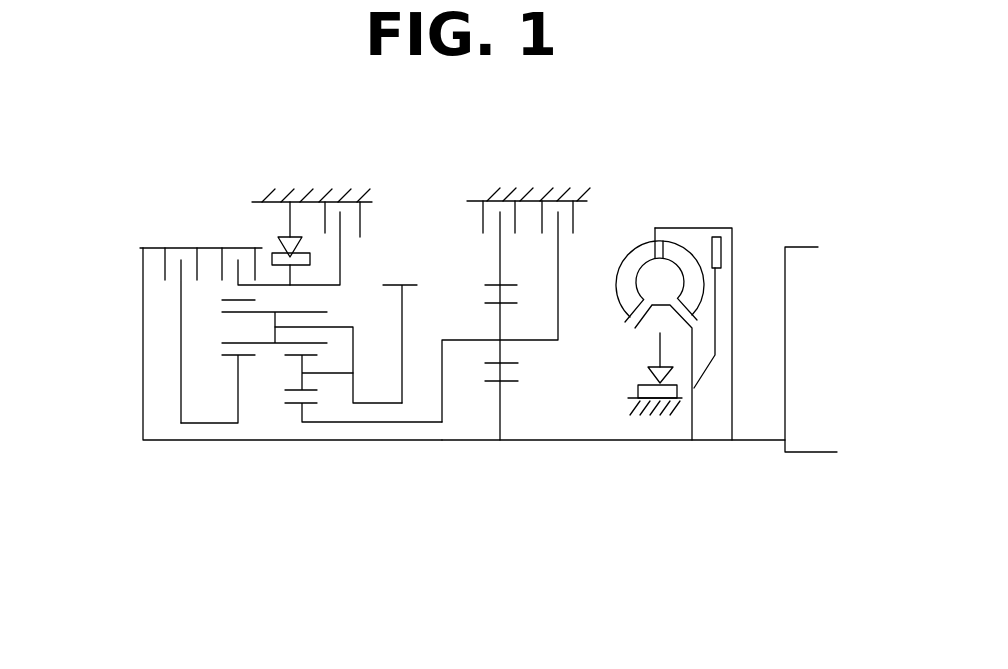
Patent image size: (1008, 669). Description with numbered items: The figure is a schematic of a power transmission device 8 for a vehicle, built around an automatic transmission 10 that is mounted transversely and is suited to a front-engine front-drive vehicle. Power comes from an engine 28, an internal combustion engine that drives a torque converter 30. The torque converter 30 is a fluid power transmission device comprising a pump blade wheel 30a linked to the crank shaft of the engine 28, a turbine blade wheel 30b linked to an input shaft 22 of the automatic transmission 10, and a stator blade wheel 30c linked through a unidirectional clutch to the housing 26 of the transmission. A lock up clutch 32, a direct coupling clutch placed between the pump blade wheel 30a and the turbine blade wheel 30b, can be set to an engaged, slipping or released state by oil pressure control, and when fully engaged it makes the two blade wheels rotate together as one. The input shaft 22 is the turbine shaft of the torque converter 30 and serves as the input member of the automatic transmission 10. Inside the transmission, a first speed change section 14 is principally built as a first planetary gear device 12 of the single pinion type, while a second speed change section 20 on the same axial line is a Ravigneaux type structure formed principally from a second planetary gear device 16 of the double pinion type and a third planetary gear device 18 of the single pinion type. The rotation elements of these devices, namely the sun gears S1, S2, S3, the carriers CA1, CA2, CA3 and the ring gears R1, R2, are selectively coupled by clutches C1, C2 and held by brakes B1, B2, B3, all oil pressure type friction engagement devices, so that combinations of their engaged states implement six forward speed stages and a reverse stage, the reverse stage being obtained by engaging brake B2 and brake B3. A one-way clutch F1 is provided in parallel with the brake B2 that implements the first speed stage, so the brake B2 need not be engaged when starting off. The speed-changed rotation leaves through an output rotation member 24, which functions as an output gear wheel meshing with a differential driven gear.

The power transmission device 8 is at (708, 144).
The automatic transmission 10 is at (212, 200).
The first planetary gear device 12 is at (502, 445).
The first speed change section 14 is at (586, 447).
The second planetary gear device 16 is at (313, 453).
The third planetary gear device 18 is at (240, 448).
The second speed change section 20 is at (182, 458).
The input shaft 22 is at (655, 440).
The output rotation member 24 is at (404, 285).
The housing 26 is at (313, 196).
The engine 28 is at (802, 253).
The torque converter 30 is at (663, 205).
The pump blade wheel 30a is at (621, 282).
The turbine blade wheel 30b is at (693, 292).
The stator blade wheel 30c is at (648, 330).
The lock up clutch 32 is at (720, 280).
The clutch C1 is at (179, 317).
The clutch C2 is at (281, 248).
The brake B1 is at (574, 217).
The brake B2 is at (361, 220).
The brake B3 is at (481, 217).
The one-way clutch F1 is at (287, 237).
The sun gear S1 is at (508, 383).
The sun gear S2 is at (297, 404).
The sun gear S3 is at (232, 356).
The ring gear R1 is at (492, 285).
The ring gear R2 is at (227, 298).
The carrier CA1 is at (520, 341).
The carrier CA2 is at (341, 327).
The carrier CA3 is at (312, 357).